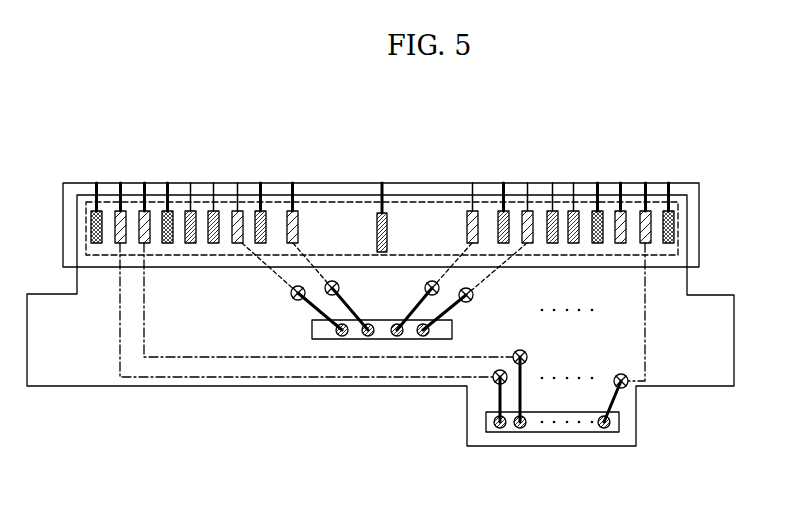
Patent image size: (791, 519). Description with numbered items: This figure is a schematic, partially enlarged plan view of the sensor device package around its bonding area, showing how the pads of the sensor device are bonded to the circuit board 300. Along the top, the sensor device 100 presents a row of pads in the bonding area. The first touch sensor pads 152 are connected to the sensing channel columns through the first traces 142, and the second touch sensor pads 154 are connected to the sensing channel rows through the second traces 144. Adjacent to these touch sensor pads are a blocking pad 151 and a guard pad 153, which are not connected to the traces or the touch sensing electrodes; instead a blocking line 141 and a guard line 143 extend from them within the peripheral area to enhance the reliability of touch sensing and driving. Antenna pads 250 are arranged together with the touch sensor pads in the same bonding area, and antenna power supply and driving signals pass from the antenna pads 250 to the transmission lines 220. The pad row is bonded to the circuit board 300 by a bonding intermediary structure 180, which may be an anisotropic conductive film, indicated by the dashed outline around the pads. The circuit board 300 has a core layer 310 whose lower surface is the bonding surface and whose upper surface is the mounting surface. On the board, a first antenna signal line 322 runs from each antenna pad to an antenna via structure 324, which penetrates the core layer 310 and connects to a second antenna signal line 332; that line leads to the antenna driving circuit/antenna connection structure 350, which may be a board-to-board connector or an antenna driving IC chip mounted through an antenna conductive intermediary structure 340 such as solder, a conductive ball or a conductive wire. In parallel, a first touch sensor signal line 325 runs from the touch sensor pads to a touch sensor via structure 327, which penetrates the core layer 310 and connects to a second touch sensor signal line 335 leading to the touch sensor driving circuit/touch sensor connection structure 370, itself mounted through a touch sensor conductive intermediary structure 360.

The connector 100 is at (692, 225).
The blocking line 141 is at (165, 187).
The first trace 142 is at (553, 190).
The guard line 143 is at (670, 190).
The second trace 144 is at (143, 188).
The blocking pad 151 is at (172, 212).
The first touch sensor pad 152 is at (223, 213).
The guard pad 153 is at (657, 213).
The second touch sensor pad 154 is at (130, 212).
The bonding intermediary structure 180 is at (684, 206).
The transmission line 220 is at (293, 190).
The antenna pad 250 is at (242, 212).
The circuit board 300 is at (66, 392).
The core layer 310 is at (105, 368).
The first antenna signal line 322 is at (278, 277).
The antenna via structure 324 is at (296, 303).
The first touch sensor signal line 325 is at (442, 377).
The touch sensor via structure 327 is at (497, 384).
The second antenna signal line 332 is at (313, 308).
The second touch sensor signal line 335 is at (525, 388).
The antenna conductive intermediary structure 340 is at (333, 340).
The antenna driving circuit/antenna connection structure 350 is at (380, 340).
The touch sensor conductive intermediary structure 360 is at (498, 430).
The touch sensor driving circuit/touch sensor connection structure 370 is at (555, 432).